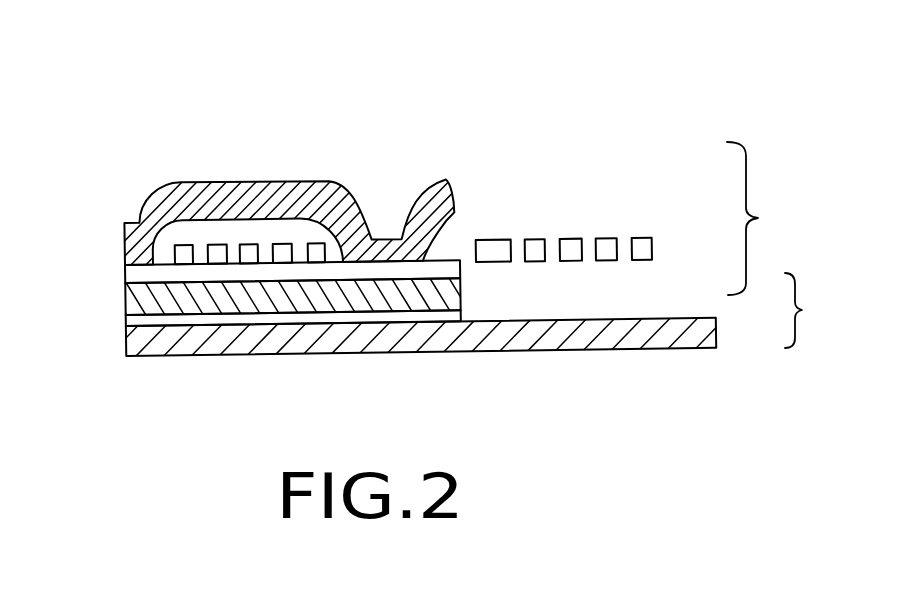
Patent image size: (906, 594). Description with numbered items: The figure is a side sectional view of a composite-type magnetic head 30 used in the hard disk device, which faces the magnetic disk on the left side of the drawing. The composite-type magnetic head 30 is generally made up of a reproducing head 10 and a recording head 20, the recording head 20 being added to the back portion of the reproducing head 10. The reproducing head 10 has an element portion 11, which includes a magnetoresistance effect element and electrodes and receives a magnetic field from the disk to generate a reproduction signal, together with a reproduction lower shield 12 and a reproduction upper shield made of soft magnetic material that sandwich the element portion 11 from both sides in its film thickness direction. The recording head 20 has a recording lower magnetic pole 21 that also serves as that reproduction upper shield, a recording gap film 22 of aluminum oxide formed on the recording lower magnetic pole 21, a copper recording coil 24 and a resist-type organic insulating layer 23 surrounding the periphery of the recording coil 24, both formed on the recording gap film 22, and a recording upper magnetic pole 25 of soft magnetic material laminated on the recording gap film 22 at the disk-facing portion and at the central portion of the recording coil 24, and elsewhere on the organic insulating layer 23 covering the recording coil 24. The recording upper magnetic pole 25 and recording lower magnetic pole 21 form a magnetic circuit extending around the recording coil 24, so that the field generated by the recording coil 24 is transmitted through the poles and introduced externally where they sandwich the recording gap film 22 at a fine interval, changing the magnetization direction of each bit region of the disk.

The reproducing head 10 is at (809, 310).
The element portion 11 is at (126, 322).
The reproduction lower shield 12 is at (128, 343).
The recording head 20 is at (763, 218).
The recording lower magnetic pole 21 is at (130, 298).
The recording gap film 22 is at (133, 277).
The organic insulating layer 23 is at (270, 224).
The recording coil 24 is at (497, 240).
The recording upper magnetic pole 25 is at (158, 211).
The composite-type magnetic head 30 is at (650, 113).